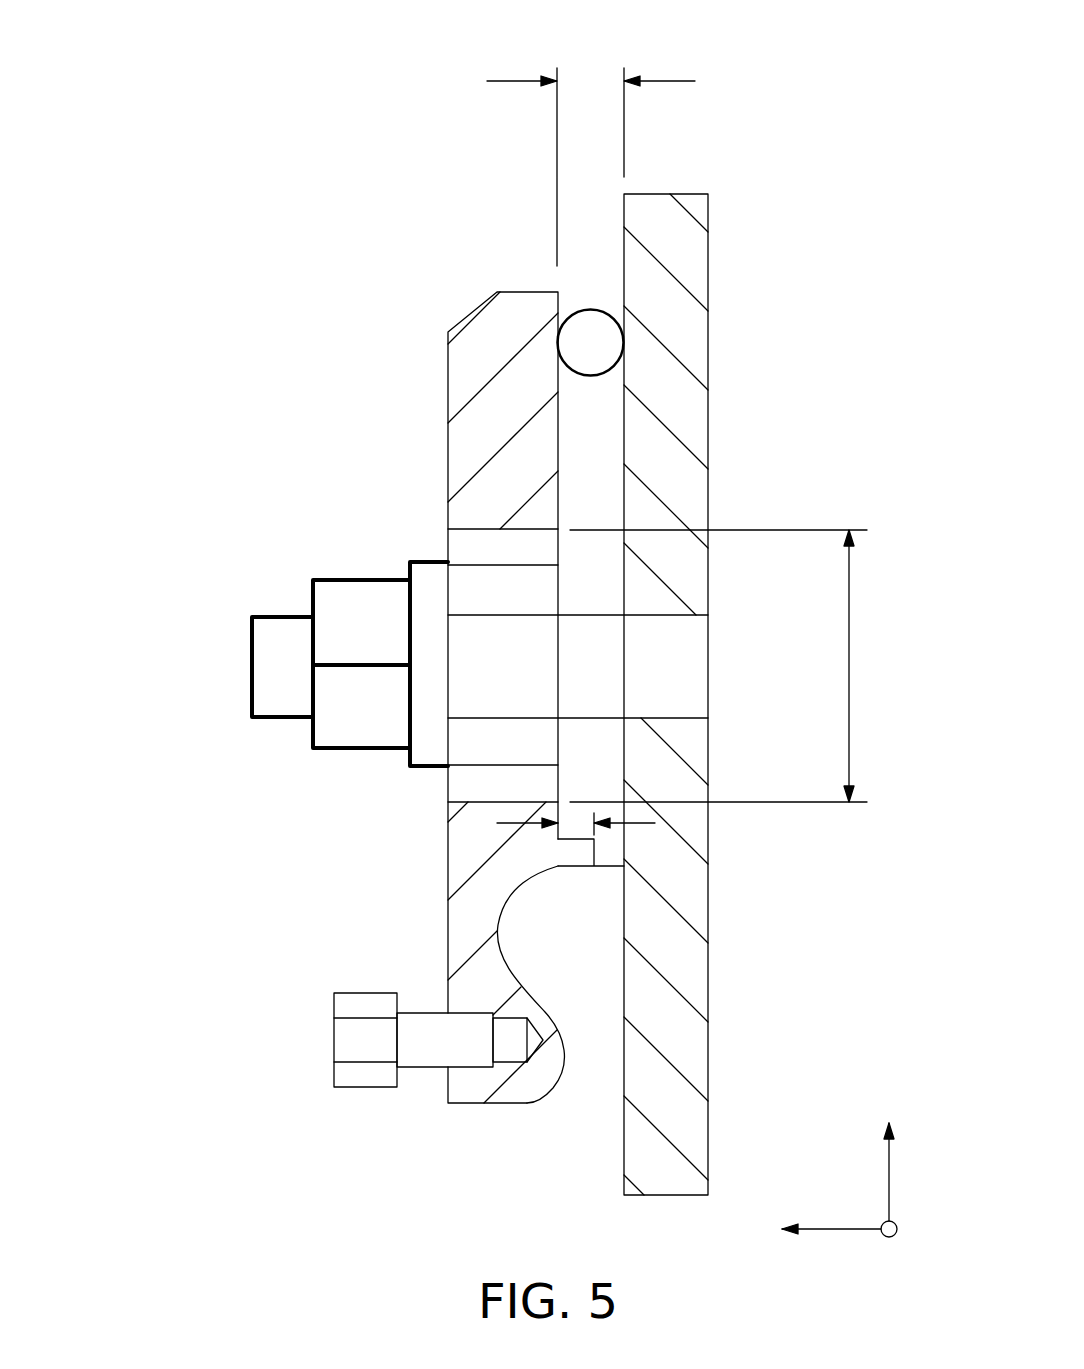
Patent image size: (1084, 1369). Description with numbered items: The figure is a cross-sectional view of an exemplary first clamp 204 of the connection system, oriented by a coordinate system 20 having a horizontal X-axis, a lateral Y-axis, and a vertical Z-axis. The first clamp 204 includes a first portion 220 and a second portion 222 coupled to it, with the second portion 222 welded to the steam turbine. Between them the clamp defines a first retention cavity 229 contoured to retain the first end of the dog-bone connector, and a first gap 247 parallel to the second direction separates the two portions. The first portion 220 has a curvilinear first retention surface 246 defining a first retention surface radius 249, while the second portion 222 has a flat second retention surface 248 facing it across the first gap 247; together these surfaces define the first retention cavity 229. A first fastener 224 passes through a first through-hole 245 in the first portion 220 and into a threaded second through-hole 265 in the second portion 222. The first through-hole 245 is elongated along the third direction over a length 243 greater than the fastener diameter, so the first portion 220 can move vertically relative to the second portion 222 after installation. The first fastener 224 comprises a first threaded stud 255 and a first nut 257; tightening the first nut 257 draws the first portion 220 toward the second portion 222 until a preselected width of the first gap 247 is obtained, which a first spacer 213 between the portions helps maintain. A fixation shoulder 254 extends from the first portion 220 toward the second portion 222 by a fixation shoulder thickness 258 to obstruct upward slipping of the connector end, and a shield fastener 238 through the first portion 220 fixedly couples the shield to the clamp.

The coordinate system 20 is at (838, 1182).
The first clamp 204 is at (462, 757).
The first spacer 213 is at (587, 333).
The first portion 220 is at (523, 367).
The second portion 222 is at (693, 256).
The first fastener 224 is at (384, 629).
The first retention cavity 229 is at (578, 1121).
The shield fastener 238 is at (334, 1038).
The length 243 is at (850, 673).
The first through-hole 245 is at (384, 684).
The first retention surface 246 is at (515, 963).
The first gap 247 is at (591, 79).
The second retention surface 248 is at (624, 1050).
The first retention surface radius 249 is at (512, 912).
The fixation shoulder 254 is at (628, 866).
The first threaded stud 255 is at (259, 652).
The first nut 257 is at (319, 591).
The fixation shoulder thickness 258 is at (648, 823).
The second through-hole 265 is at (755, 610).